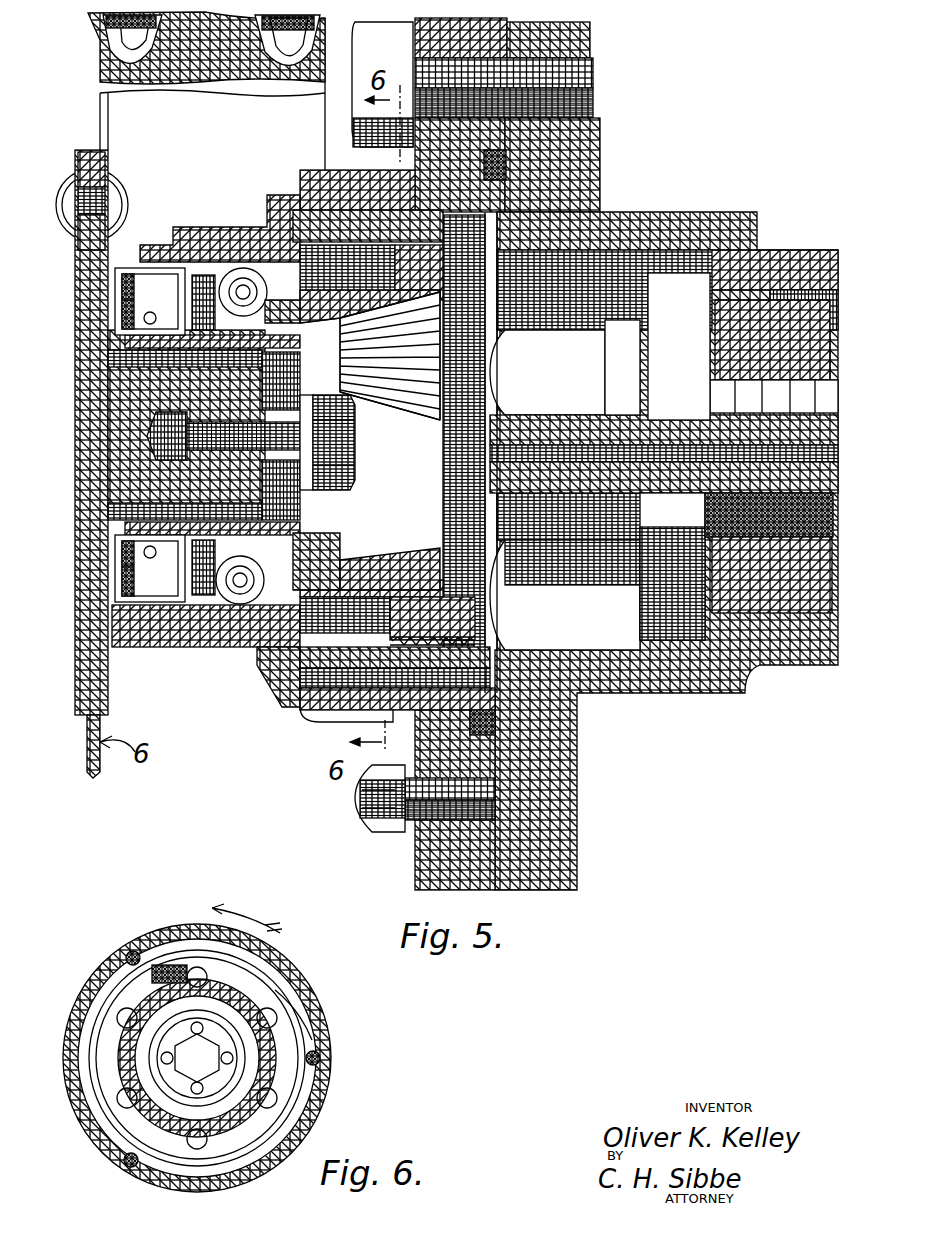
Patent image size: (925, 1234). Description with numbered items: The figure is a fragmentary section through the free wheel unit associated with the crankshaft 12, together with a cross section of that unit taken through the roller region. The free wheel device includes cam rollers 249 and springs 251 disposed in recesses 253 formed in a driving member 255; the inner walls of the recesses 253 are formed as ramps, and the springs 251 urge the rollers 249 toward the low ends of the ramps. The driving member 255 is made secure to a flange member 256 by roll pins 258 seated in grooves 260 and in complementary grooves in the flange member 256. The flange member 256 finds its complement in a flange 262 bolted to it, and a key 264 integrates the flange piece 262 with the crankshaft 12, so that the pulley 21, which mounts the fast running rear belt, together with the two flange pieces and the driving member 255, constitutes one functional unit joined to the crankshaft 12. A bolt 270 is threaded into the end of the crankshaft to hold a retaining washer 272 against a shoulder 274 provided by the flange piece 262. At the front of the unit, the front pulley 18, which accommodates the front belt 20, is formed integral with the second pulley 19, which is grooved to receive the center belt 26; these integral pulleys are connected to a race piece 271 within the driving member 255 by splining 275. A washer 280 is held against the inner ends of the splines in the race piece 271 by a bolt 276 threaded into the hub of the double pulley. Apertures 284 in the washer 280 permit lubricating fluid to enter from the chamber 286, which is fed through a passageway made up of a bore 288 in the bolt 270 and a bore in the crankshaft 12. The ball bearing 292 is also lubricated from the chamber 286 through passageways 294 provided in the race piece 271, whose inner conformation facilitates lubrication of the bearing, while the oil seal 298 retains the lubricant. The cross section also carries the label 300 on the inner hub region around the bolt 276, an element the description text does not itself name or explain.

In FIG. 5, the crankshaft 12 is at (806, 610).
In FIG. 5, the front pulley 18 is at (135, 55).
In FIG. 5, the second pulley 19 is at (285, 62).
In FIG. 5, the front belt 20 is at (96, 40).
In FIG. 5, the pulley 21 is at (400, 868).
In FIG. 5, the center belt 26 is at (262, 38).
In FIG. 5, the cam rollers 249 is at (368, 265).
In FIG. 6, the cam rollers 249 is at (208, 975).
In FIG. 6, the springs 251 is at (177, 975).
In FIG. 6, the recesses 253 is at (118, 1098).
In FIG. 5, the driving member 255 is at (488, 650).
In FIG. 6, the driving member 255 is at (300, 985).
In FIG. 5, the flange member 256 is at (405, 185).
In FIG. 6, the flange member 256 is at (312, 1095).
In FIG. 5, the roll pins 258 is at (318, 695).
In FIG. 6, the roll pins 258 is at (136, 950).
In FIG. 6, the grooves 260 is at (160, 968).
In FIG. 5, the flange 262 is at (570, 746).
In FIG. 5, the key 264 is at (808, 300).
In FIG. 5, the bolt 270 is at (578, 345).
In FIG. 5, the race piece 271 is at (495, 628).
In FIG. 5, the retaining washer 272 is at (648, 622).
In FIG. 5, the shoulder 274 is at (700, 290).
In FIG. 5, the splining 275 is at (182, 505).
In FIG. 5, the bolt 276 is at (345, 442).
In FIG. 6, the bolt 276 is at (192, 1066).
In FIG. 5, the washer 280 is at (285, 380).
In FIG. 5, the apertures 284 is at (352, 398).
In FIG. 5, the chamber 286 is at (480, 560).
In FIG. 5, the bore 288 is at (672, 432).
In FIG. 5, the ball bearing 292 is at (240, 604).
In FIG. 5, the passageways 294 is at (318, 298).
In FIG. 5, the oil seal 298 is at (122, 270).
In FIG. 6, the hub ring 300 is at (175, 1035).